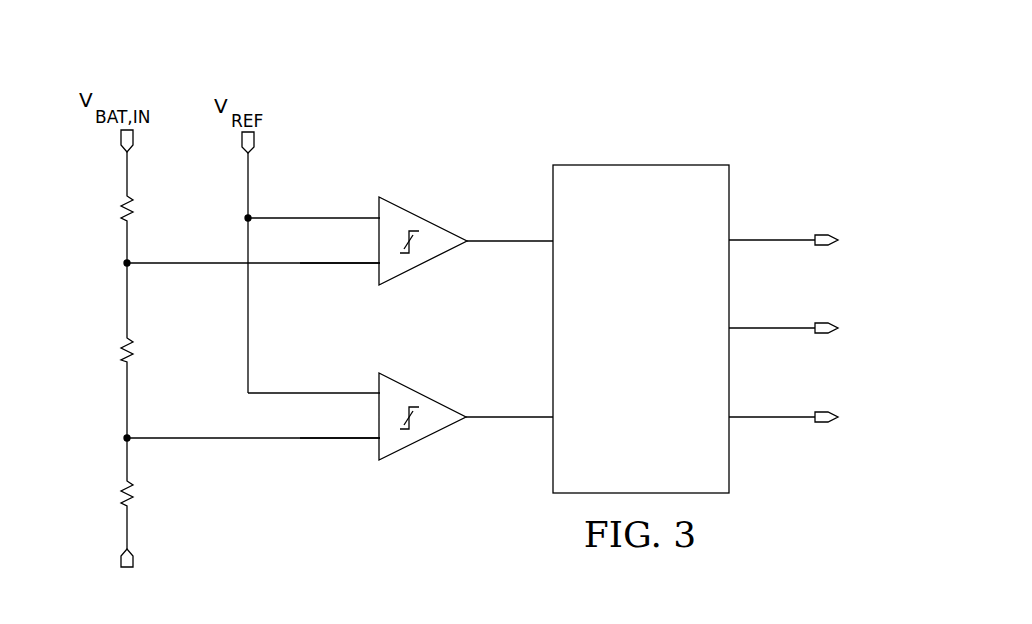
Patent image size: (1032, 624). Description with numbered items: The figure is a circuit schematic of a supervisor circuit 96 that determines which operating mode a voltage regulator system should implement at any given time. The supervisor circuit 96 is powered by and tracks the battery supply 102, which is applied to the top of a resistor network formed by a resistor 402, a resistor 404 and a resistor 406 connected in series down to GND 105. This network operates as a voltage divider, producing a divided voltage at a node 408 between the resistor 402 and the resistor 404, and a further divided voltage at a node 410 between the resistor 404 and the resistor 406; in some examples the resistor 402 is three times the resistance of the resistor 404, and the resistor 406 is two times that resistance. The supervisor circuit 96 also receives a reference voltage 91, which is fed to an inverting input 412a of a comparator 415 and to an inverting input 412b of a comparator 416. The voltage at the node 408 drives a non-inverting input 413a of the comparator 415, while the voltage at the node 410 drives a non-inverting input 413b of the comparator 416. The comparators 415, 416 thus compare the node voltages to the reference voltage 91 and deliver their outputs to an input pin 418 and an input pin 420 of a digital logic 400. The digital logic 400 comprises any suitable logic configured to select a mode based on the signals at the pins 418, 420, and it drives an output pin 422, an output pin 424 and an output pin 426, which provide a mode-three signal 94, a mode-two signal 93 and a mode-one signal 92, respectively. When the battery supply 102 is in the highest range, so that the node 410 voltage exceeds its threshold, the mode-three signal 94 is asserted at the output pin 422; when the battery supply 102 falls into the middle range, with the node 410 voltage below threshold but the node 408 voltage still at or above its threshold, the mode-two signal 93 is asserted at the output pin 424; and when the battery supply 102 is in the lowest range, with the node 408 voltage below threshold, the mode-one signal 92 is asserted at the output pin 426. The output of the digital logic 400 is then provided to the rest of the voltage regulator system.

The supervisor circuit 96 is at (728, 78).
The battery supply 102 is at (121, 139).
The resistor 402 is at (122, 207).
The resistor 404 is at (122, 350).
The resistor 406 is at (122, 494).
The node 408 is at (131, 267).
The node 410 is at (131, 435).
The GND 105 is at (119, 562).
The reference voltage 91 is at (255, 145).
The inverting input 412a is at (376, 213).
The non-inverting input 413a is at (376, 272).
The comparator 415 is at (419, 218).
The input pin 418 is at (546, 238).
The inverting input 412b is at (376, 388).
The non-inverting input 413b is at (376, 445).
The comparator 416 is at (424, 439).
The input pin 420 is at (546, 419).
The digital logic 400 is at (620, 374).
The output pin 422 is at (733, 237).
The output pin 424 is at (733, 325).
The output pin 426 is at (733, 421).
The mode 3 signal 94 is at (826, 234).
The mode 2 signal 93 is at (826, 322).
The mode 1 signal 92 is at (826, 424).